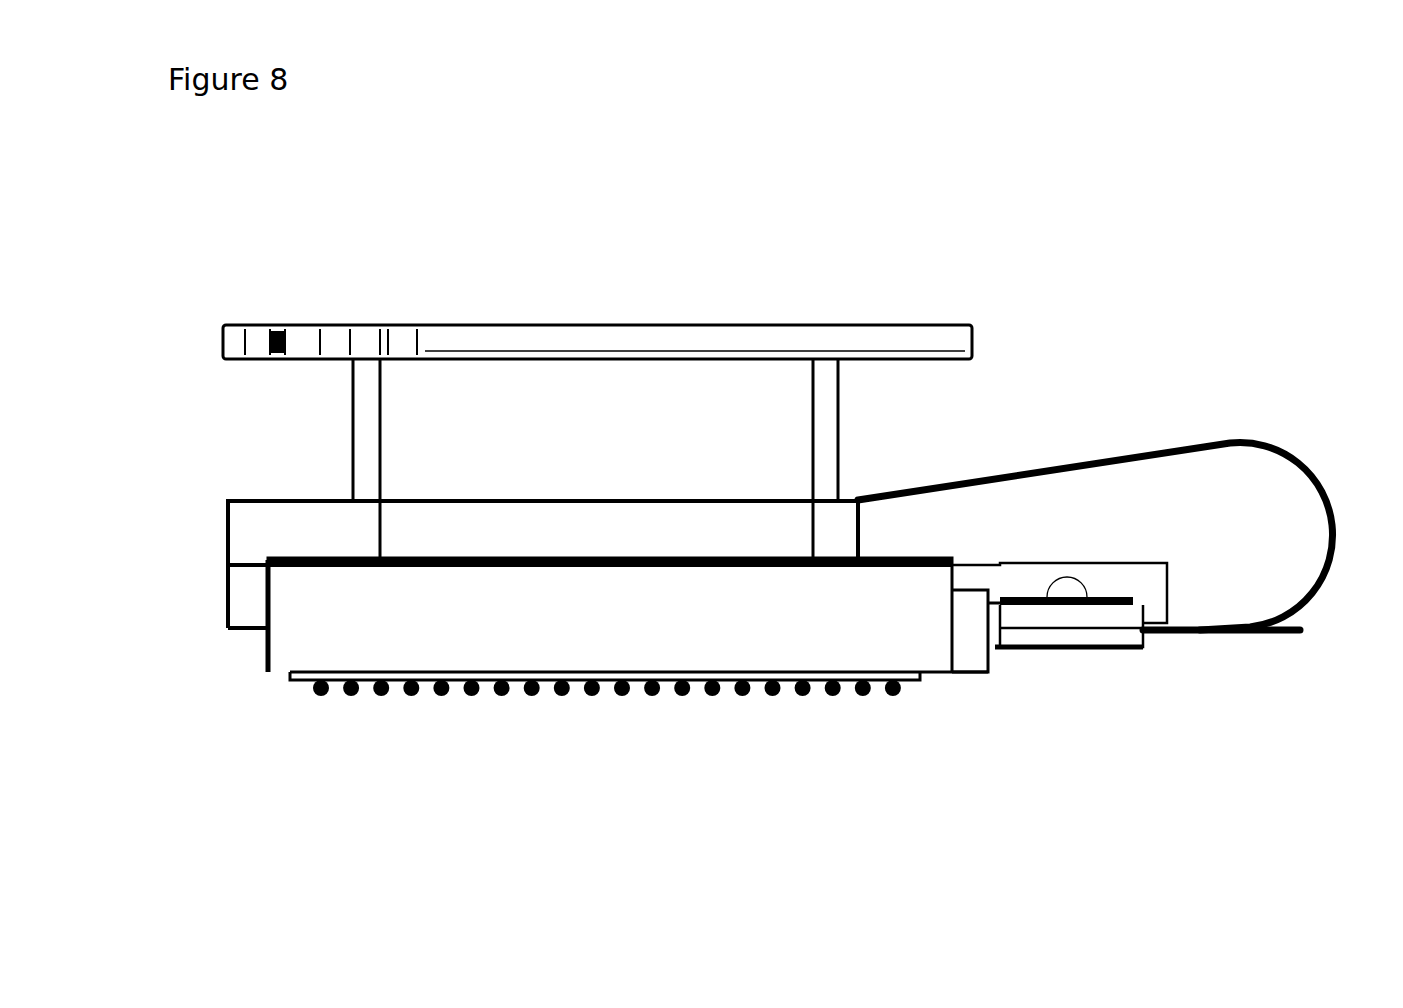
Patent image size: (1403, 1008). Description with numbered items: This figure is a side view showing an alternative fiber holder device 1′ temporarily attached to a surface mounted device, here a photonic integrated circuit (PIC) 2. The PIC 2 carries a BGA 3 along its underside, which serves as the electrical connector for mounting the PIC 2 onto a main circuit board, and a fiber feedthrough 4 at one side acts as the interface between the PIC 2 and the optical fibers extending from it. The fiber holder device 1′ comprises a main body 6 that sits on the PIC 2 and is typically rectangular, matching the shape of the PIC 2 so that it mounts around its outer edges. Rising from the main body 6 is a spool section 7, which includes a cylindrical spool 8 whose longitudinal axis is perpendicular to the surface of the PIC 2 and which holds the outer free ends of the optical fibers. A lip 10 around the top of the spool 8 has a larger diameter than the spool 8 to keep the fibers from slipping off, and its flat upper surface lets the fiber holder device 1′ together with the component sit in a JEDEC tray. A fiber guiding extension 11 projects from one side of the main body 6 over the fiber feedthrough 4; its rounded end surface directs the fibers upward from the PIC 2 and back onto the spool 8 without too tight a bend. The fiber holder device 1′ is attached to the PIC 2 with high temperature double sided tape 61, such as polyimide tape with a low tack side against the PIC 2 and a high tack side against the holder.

The fiber holder device 1′ is at (466, 224).
The lip 10 is at (832, 337).
The spool section 7 is at (836, 452).
The spool 8 is at (599, 446).
The main body 6 is at (252, 533).
The photonic integrated circuit 2 is at (450, 627).
The high temperature double sided tape 61 is at (427, 557).
The BGA 3 is at (657, 693).
The fiber feedthrough 4 is at (1037, 638).
The fiber guiding extension 11 is at (1198, 480).